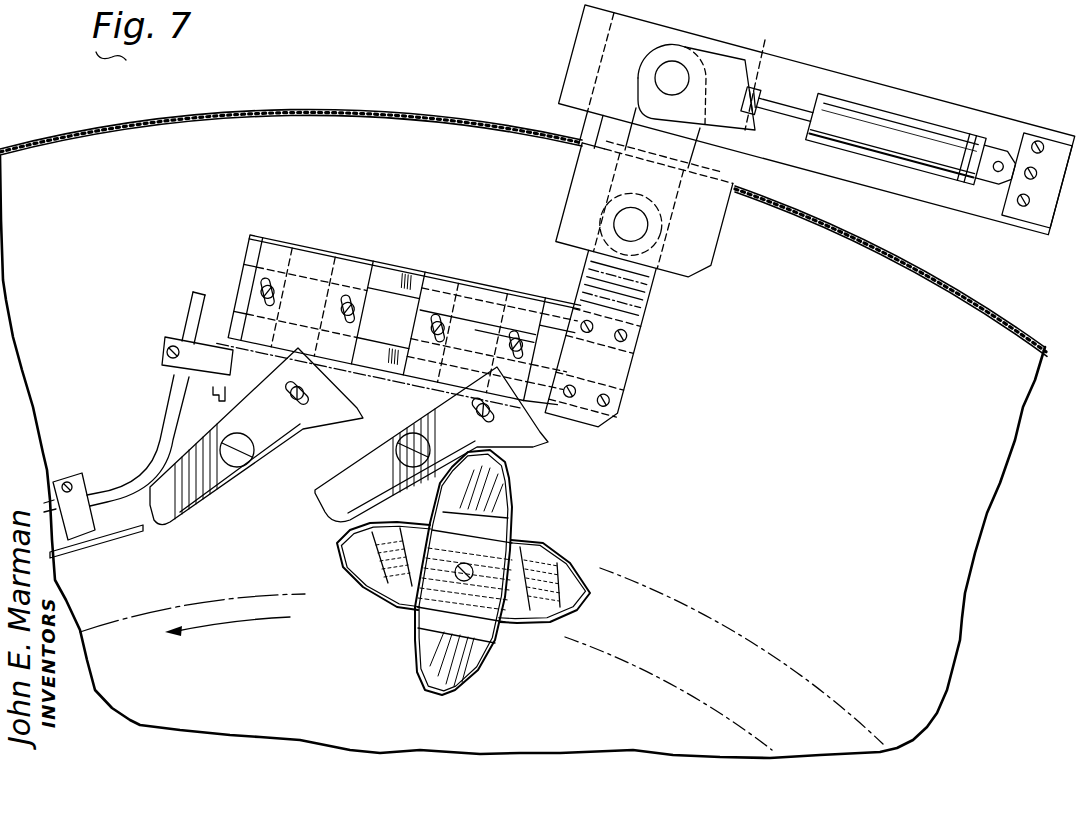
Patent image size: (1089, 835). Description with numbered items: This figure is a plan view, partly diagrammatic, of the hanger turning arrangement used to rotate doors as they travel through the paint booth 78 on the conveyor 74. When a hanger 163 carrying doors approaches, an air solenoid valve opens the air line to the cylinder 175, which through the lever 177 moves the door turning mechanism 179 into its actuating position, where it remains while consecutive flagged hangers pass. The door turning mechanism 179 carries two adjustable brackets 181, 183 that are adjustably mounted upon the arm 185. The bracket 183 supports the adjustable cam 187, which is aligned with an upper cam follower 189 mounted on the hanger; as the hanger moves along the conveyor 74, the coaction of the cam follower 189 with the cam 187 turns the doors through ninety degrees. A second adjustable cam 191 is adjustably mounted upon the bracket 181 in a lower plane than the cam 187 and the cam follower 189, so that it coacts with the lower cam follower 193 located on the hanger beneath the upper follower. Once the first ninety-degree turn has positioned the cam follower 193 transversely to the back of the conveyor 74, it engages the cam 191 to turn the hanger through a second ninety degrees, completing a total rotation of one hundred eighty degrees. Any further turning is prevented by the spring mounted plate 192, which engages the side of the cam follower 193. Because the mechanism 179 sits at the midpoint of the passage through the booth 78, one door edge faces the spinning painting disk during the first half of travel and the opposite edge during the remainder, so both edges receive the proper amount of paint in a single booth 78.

The conveyor 74 is at (770, 657).
The booth 78 is at (372, 107).
The hanger 163 is at (458, 580).
The cylinder 175 is at (865, 108).
The lever 177 is at (642, 298).
The door turning mechanism 179 is at (402, 262).
The adjustable bracket 181 is at (278, 255).
The adjustable bracket 183 is at (479, 300).
The arm 185 is at (553, 310).
The adjustable cam 187 is at (555, 430).
The upper cam follower 189 is at (513, 497).
The second adjustable cam 191 is at (218, 486).
The spring mounted plate 192 is at (111, 537).
The cam follower 193 is at (515, 623).